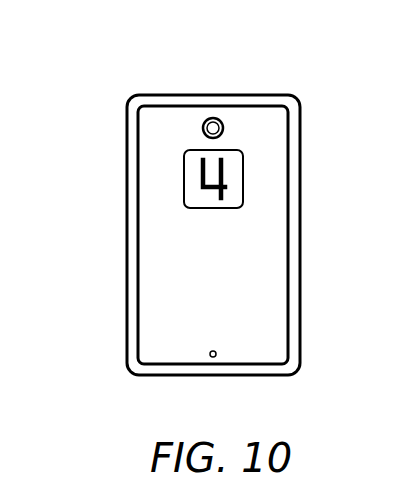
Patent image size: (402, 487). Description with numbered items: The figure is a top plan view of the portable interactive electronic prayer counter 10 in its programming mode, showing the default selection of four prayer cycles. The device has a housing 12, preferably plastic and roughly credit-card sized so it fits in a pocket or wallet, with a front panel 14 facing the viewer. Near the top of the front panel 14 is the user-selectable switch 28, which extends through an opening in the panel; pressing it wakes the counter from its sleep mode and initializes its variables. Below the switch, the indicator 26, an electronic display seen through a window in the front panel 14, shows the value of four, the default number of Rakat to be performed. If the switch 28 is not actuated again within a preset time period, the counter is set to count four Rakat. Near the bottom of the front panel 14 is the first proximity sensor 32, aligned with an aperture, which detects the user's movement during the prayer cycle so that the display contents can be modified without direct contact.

The portable interactive electronic prayer counter 10 is at (78, 105).
The housing 12 is at (127, 282).
The front panel 14 is at (272, 296).
The indicator 26 is at (237, 175).
The user-selectable switch 28 is at (213, 118).
The first proximity sensor 32 is at (214, 357).